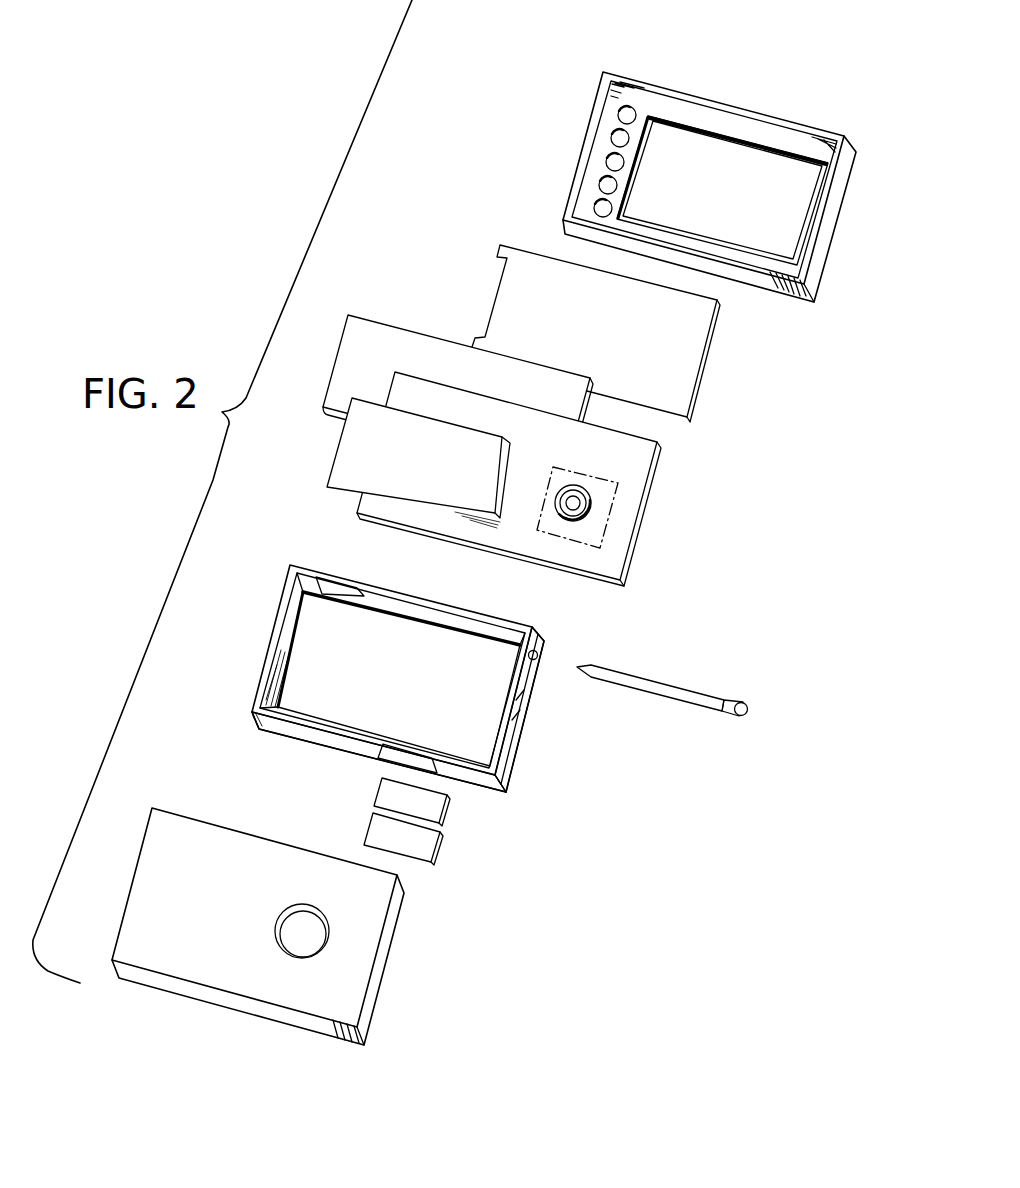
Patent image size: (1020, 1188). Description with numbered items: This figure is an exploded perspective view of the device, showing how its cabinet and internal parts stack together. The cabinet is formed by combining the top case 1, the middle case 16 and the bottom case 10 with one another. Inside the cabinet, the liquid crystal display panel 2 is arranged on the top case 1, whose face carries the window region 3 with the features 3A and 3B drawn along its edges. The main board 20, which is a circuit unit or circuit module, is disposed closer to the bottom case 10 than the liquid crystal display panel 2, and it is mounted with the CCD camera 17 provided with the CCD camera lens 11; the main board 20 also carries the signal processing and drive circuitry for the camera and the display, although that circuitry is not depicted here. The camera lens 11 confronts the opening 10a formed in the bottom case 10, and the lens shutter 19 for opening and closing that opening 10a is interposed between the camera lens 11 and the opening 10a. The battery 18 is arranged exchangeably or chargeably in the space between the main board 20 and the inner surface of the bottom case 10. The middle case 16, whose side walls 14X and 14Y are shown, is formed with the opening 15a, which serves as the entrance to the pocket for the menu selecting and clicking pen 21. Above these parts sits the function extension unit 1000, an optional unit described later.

The top case 1 is at (833, 212).
The display window 3 is at (717, 125).
The operation buttons 3A is at (641, 105).
The window edge portion 3B is at (793, 160).
The liquid crystal display panel 2 is at (695, 348).
The function extension unit 1000 is at (395, 323).
The main board 20 is at (650, 457).
The CCD camera 17 is at (617, 492).
The CCD camera lens 11 is at (592, 505).
The battery 18 is at (340, 447).
The middle case 16 is at (267, 638).
The frame side wall X 14X is at (473, 792).
The frame side wall Y 14Y is at (518, 755).
The opening 15a is at (540, 657).
The pen 21 is at (650, 682).
The lens shutter 19 is at (425, 848).
The bottom case 10 is at (372, 1018).
The opening 10a is at (322, 938).